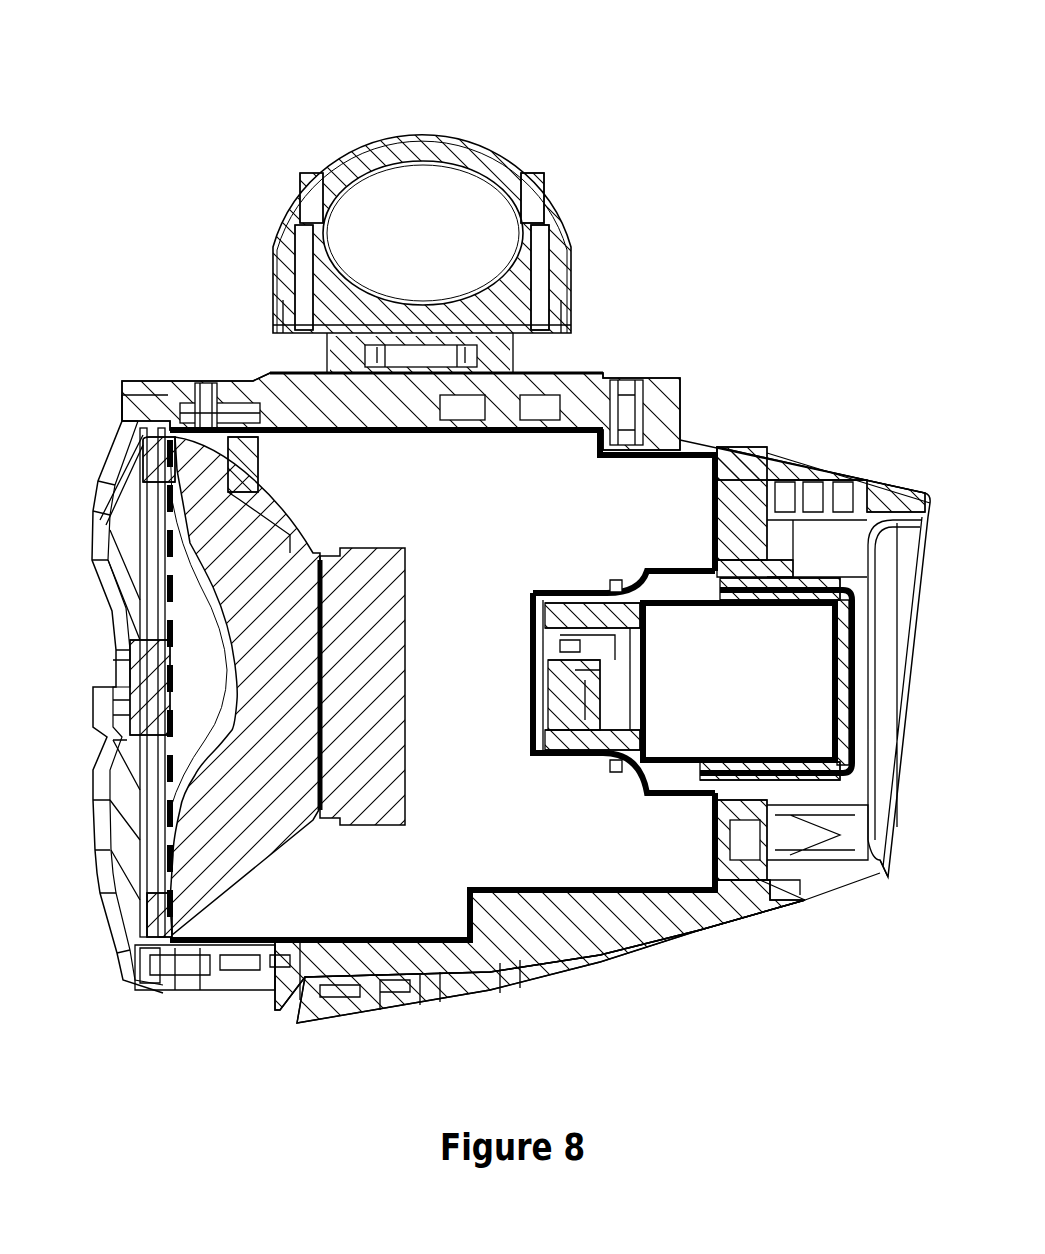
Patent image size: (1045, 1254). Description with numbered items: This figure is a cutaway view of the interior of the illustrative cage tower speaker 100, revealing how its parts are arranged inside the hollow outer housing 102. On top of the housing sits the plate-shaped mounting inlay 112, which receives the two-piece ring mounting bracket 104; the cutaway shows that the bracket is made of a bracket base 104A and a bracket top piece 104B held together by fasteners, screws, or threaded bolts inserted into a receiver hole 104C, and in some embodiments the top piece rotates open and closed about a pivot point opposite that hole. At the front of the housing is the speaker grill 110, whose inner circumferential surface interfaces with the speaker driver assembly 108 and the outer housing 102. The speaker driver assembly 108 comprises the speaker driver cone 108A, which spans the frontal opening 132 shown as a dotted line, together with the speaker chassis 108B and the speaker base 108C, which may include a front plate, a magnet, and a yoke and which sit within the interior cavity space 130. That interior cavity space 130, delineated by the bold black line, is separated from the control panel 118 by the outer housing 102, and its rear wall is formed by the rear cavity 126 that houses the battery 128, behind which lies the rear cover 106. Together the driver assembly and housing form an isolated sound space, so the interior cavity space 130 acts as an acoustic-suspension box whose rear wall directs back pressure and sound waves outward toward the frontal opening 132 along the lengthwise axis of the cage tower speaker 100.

The cage tower speaker 100 is at (162, 96).
The outer housing 102 is at (605, 935).
The mounting bracket 104 is at (612, 207).
The bracket base 104A is at (292, 300).
The bracket top piece 104B is at (427, 133).
The receiver hole 104C is at (305, 243).
The rear cover 106 is at (815, 475).
The speaker driver assembly 108 is at (140, 918).
The speaker driver cone 108A is at (157, 816).
The speaker chassis 108B is at (270, 520).
The speaker base 108C is at (360, 555).
The speaker grill 110 is at (100, 500).
The mounting inlay 112 is at (567, 375).
The control panel 118 is at (450, 1005).
The rear cavity 126 is at (683, 590).
The battery 128 is at (718, 598).
The interior cavity space 130 is at (615, 865).
The frontal opening 132 is at (170, 955).